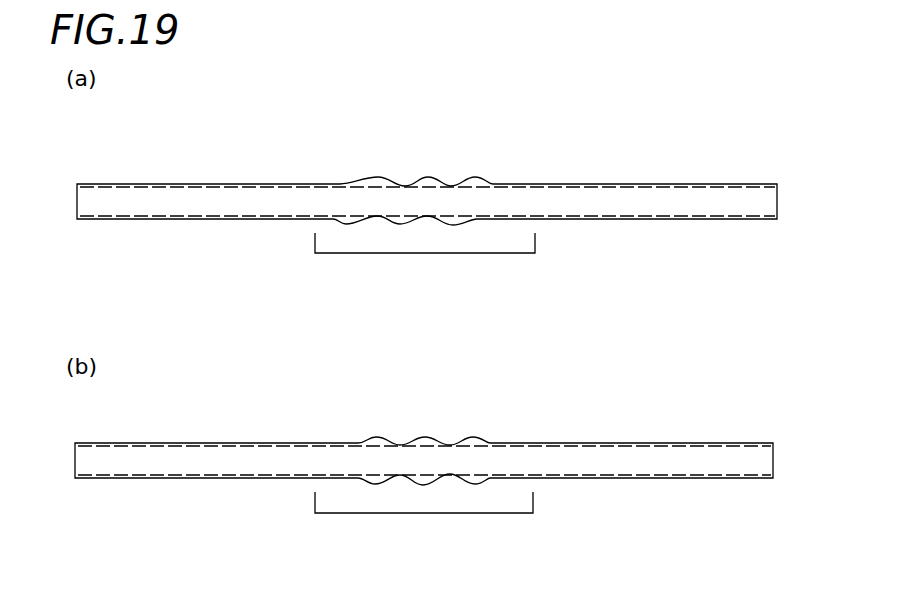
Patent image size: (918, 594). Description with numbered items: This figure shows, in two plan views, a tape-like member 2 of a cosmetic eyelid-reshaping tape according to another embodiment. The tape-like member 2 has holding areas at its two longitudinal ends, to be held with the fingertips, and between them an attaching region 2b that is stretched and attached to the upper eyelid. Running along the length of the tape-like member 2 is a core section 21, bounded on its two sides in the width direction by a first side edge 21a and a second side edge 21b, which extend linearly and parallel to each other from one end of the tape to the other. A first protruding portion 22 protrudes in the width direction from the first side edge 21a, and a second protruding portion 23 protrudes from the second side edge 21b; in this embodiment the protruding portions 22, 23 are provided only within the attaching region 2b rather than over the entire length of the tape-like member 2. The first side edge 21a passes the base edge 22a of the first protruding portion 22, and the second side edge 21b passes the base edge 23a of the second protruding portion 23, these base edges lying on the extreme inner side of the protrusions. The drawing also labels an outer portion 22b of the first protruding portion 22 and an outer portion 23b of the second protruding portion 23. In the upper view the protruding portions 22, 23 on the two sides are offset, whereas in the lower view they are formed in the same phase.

The tape-like member 2 is at (748, 169).
The attaching region 2b is at (426, 253).
The core section 21 is at (605, 200).
The first side edge 21a is at (213, 191).
The second side edge 21b is at (200, 211).
The first protruding portion 22 is at (371, 178).
The base edge 22a is at (452, 185).
The protrusion base portion 22b is at (478, 181).
The second protruding portion 23 is at (355, 224).
The base edge 23a is at (378, 218).
The recess side portion 23b is at (452, 226).